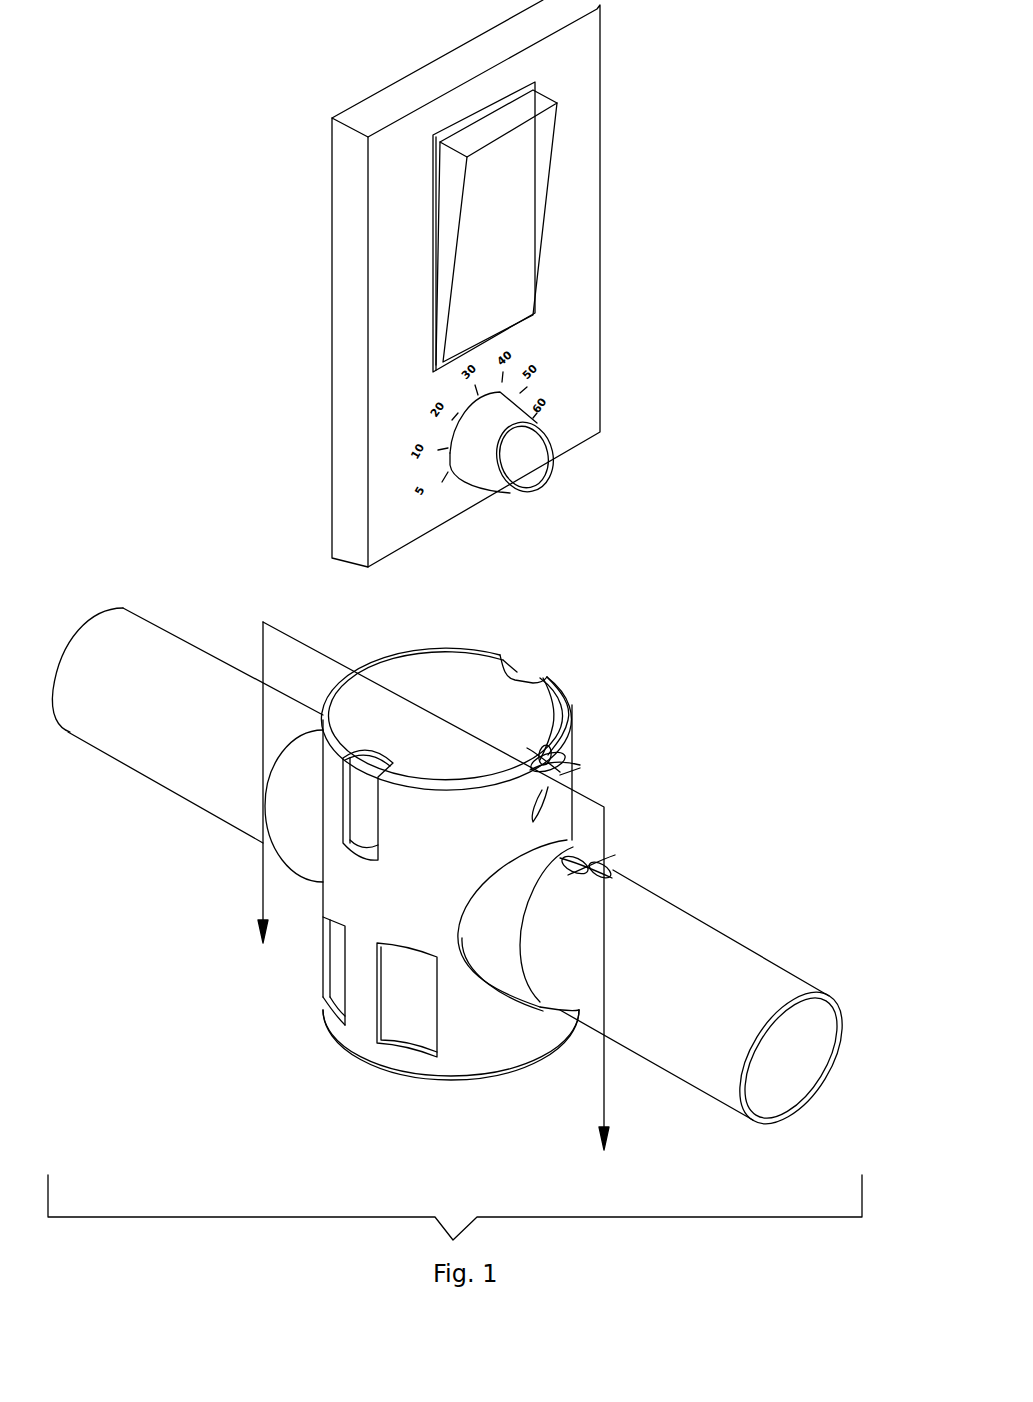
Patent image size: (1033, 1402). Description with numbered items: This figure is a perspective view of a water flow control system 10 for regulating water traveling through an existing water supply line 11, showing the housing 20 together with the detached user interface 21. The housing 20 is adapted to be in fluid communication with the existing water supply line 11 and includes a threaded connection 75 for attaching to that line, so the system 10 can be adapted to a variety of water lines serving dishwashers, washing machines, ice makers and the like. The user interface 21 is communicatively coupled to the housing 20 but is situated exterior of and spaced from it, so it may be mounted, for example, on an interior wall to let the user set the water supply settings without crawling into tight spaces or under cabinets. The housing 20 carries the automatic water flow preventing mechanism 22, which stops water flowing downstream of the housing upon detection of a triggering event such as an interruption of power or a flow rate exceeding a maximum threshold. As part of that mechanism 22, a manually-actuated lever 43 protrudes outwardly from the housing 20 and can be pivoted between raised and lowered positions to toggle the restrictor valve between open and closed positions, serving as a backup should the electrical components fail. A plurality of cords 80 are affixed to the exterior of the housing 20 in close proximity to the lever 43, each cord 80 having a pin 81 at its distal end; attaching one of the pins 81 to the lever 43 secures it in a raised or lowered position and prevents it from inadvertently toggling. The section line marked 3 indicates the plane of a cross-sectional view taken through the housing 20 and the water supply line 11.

The water flow control system 10 is at (263, 193).
The user interface 21 is at (587, 235).
The mechanism for automatically preventing water from flowing 22 is at (607, 333).
The housing 20 is at (550, 710).
The cords 80 is at (558, 740).
The pin 81 is at (577, 762).
The manually-actuated lever 43 is at (547, 790).
The threaded connection 75 is at (620, 878).
The existing water supply line 11 is at (687, 958).
The section line 3- 3 is at (431, 913).